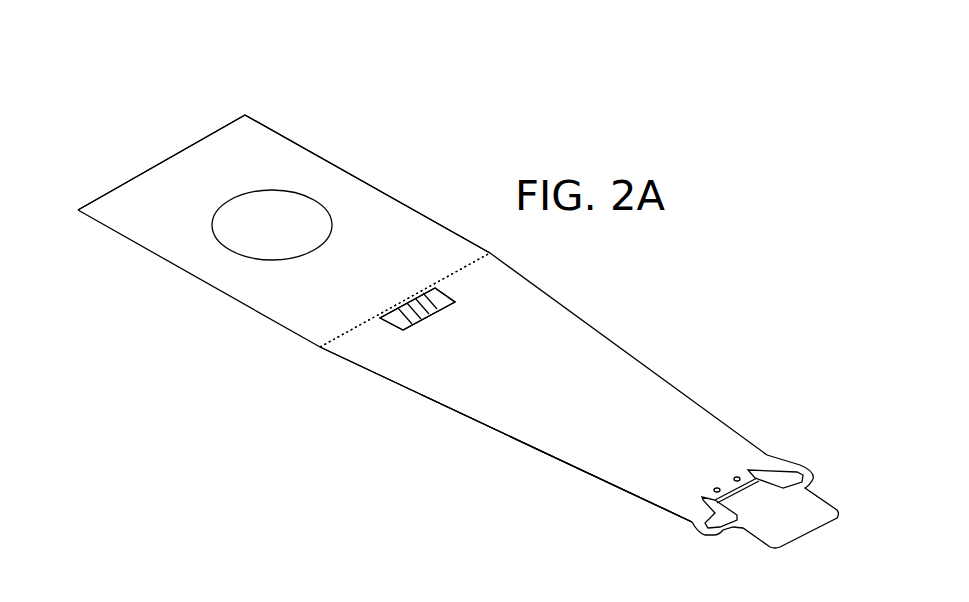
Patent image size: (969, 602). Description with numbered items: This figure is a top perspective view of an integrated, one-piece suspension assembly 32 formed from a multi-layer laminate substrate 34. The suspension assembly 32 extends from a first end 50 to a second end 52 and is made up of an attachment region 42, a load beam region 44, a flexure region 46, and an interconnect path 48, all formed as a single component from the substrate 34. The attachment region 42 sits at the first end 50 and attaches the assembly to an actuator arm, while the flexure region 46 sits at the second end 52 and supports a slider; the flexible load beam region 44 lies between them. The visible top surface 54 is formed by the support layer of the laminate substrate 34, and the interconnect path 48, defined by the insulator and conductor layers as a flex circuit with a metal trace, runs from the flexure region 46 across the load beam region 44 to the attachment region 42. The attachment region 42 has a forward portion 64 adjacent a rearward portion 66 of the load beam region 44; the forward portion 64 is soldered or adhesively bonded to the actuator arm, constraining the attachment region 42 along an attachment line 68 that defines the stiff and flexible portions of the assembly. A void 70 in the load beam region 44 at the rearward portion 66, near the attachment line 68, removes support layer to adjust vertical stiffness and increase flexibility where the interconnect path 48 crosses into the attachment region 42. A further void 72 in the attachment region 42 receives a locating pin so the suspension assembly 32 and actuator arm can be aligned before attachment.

The suspension assembly 32 is at (102, 84).
The multi-layer laminate substrate 34 is at (388, 386).
The attachment region 42 is at (220, 153).
The load beam region 44 is at (488, 395).
The flexure region 46 is at (766, 511).
The interconnect path 48 is at (428, 292).
The first end 50 is at (135, 175).
The second end 52 is at (806, 536).
The top surface 54 is at (570, 358).
The forward portion 64 is at (387, 208).
The rearward portion 66 is at (355, 348).
The attachment line 68 is at (345, 325).
The void 70 is at (443, 297).
The void 72 is at (290, 212).